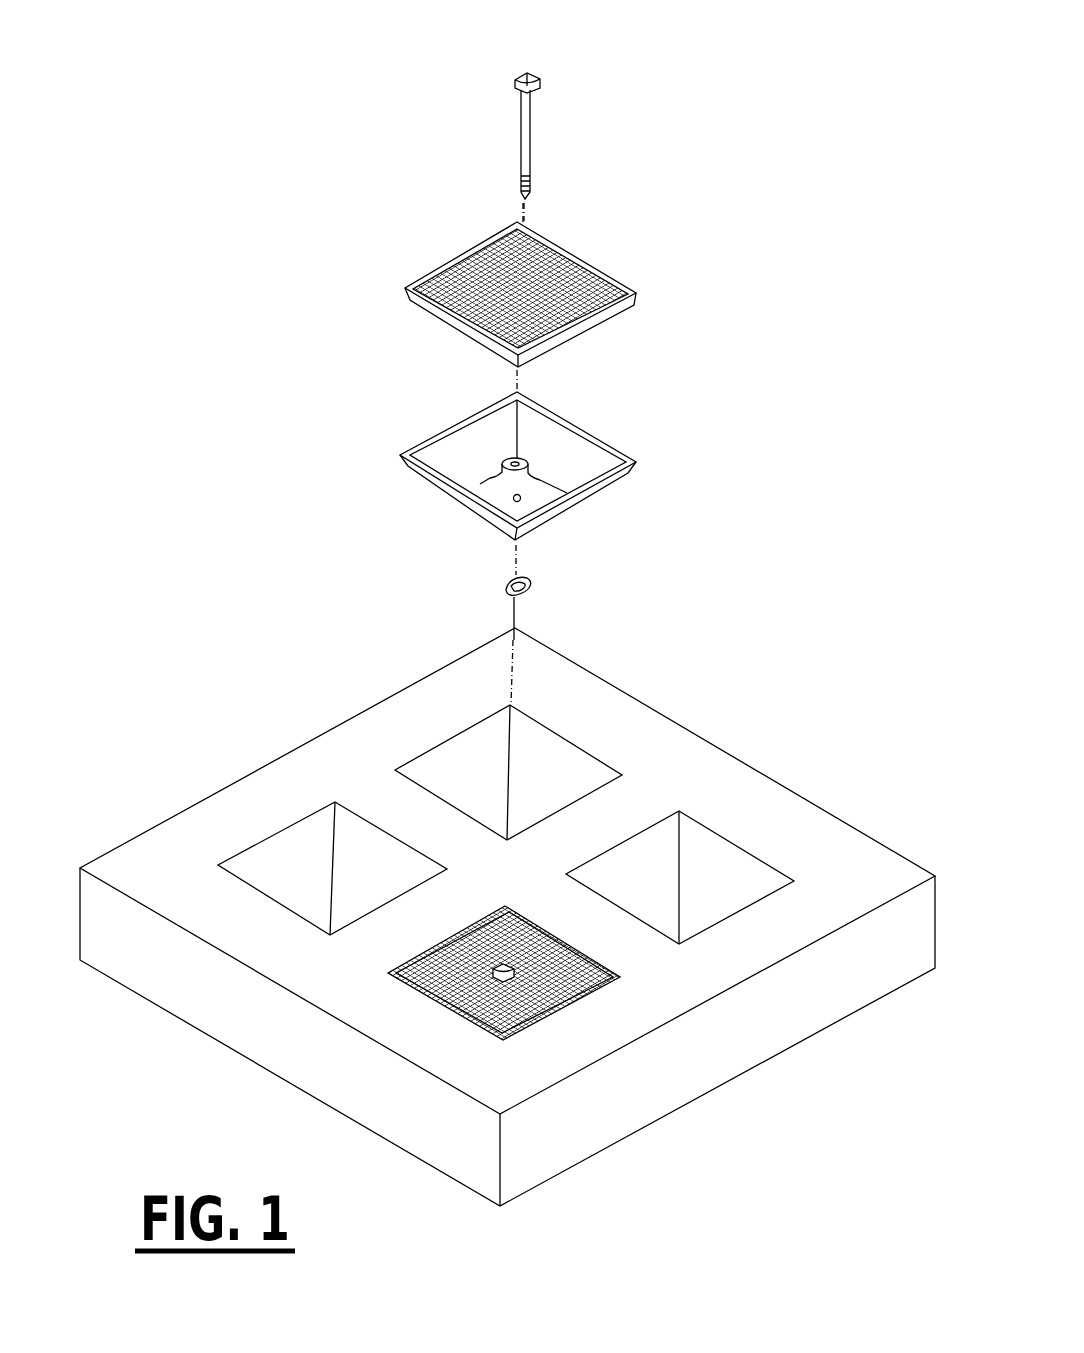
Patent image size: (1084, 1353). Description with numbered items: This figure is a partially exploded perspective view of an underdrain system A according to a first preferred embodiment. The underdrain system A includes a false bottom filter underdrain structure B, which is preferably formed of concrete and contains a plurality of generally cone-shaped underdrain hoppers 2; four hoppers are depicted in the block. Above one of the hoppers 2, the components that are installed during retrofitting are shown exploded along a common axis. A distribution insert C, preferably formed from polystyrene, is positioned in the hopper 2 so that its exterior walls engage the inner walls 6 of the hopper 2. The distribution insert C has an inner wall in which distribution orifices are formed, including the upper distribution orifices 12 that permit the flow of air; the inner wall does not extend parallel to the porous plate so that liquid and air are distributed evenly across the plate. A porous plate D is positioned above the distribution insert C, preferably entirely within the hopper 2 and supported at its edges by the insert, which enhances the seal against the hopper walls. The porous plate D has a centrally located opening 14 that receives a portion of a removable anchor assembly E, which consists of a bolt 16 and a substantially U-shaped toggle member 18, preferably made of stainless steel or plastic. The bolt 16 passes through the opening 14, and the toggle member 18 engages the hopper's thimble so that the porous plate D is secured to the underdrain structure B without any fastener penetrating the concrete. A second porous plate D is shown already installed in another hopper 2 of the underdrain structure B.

The underdrain system A is at (603, 50).
The false bottom filter underdrain structure B is at (297, 736).
The distribution insert C is at (434, 428).
The porous plate D is at (436, 262).
The removable anchor assembly E is at (511, 96).
The underdrain hopper 2 is at (552, 767).
The inner wall of hopper 6 is at (478, 789).
The upper distribution orifice 12 is at (536, 494).
The opening 14 is at (517, 287).
The bolt 16 is at (523, 145).
The toggle member 18 is at (529, 588).